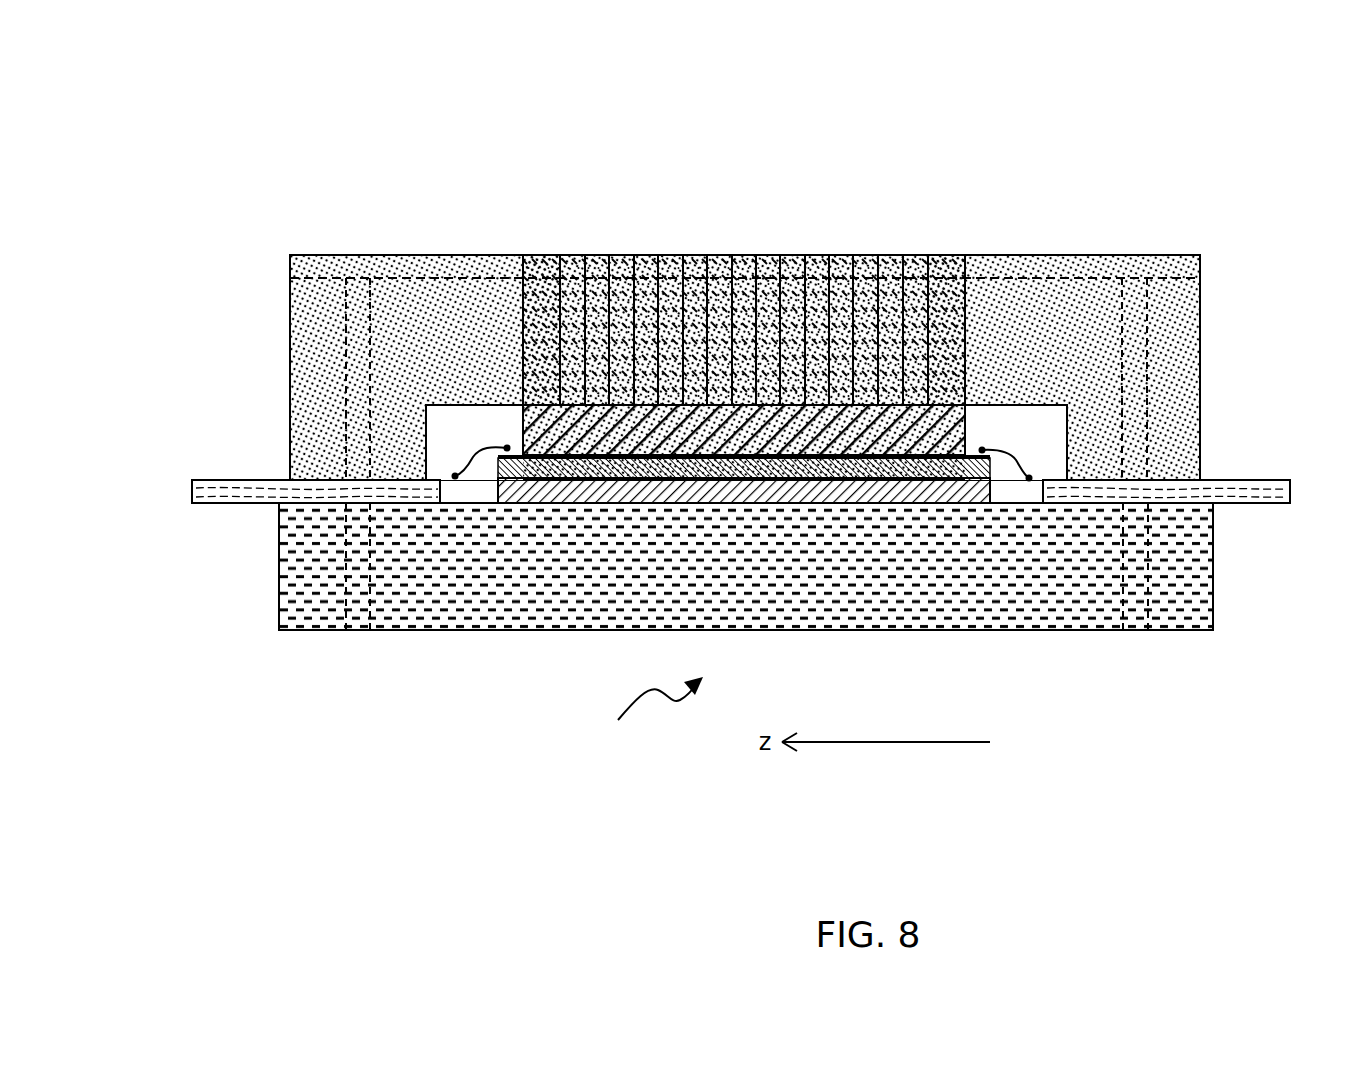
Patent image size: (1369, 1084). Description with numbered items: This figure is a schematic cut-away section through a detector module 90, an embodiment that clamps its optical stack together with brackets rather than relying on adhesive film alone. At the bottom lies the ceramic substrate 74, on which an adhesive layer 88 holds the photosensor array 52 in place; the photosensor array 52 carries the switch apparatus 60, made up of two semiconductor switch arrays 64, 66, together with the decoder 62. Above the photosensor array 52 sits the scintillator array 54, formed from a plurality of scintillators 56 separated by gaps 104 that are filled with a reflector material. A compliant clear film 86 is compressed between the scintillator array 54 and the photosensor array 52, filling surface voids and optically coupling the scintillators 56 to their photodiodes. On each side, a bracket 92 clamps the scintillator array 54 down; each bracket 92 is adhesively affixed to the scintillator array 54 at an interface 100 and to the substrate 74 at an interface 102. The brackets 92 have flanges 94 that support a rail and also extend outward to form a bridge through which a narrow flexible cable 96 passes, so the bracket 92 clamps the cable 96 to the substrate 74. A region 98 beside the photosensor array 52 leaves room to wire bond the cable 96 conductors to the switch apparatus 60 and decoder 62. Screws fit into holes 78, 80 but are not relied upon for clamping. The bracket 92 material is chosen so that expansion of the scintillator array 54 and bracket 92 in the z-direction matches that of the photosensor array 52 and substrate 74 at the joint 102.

The photosensor array 52 is at (459, 479).
The scintillator array 54 is at (965, 255).
The scintillators 56 is at (626, 255).
The switch apparatus 60 is at (533, 503).
The decoder 62 is at (506, 505).
The semiconductor switch array 64 is at (502, 458).
The semiconductor switch array 66 is at (973, 505).
The substrate 74 is at (783, 632).
The hole 78 is at (358, 632).
The hole 80 is at (355, 278).
The compliant clear film 86 is at (977, 433).
The adhesive layer 88 is at (1018, 503).
The detector module 90 is at (652, 718).
The bracket 92 is at (290, 380).
The flanges 94 is at (312, 256).
The flexible cable 96 is at (213, 503).
The region 98 is at (491, 417).
The interface 100 is at (526, 323).
The interface 102 is at (398, 505).
The gaps 104 is at (805, 255).